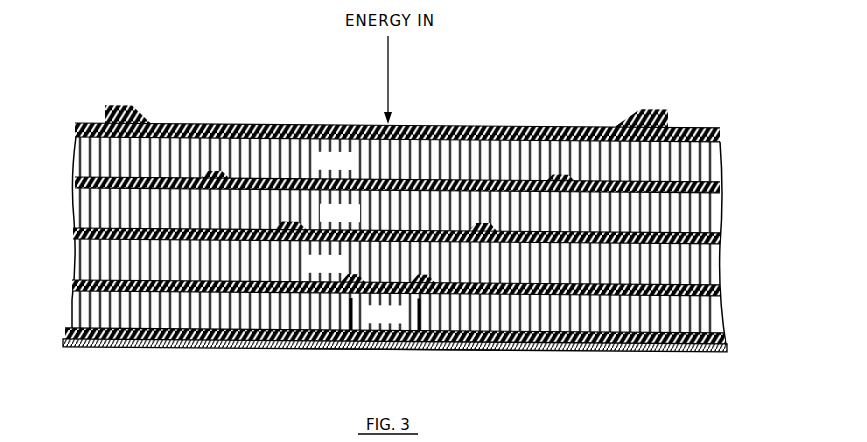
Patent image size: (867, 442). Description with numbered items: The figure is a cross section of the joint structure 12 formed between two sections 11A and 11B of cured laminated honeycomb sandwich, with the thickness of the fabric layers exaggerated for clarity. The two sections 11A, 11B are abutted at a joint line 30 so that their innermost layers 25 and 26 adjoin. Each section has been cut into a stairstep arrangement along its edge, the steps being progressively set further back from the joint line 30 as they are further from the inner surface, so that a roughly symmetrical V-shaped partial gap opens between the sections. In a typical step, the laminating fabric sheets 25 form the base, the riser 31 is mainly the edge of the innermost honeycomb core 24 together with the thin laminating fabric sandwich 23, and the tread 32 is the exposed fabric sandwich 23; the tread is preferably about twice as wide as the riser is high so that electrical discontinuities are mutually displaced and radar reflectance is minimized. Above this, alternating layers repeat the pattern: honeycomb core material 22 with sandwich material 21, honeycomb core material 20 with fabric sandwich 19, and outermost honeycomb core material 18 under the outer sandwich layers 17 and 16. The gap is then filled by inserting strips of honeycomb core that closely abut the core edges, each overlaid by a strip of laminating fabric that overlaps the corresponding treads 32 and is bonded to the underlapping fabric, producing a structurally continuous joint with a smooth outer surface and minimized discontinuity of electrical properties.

The section of laminated honeycomb sandwich 11A is at (91, 114).
The section of laminated honeycomb sandwich 11B is at (682, 115).
The joint structure 12 is at (491, 120).
The outermost sandwich layer 16 is at (721, 128).
The outermost sandwich layer 17 is at (75, 130).
The honeycomb core material 18 is at (702, 158).
The fabric sandwich 19 is at (75, 183).
The honeycomb core material 20 is at (710, 211).
The sandwich material 21 is at (73, 233).
The honeycomb core material 22 is at (706, 262).
The laminating fabric sandwich 23 is at (72, 285).
The innermost honeycomb core 24 is at (713, 319).
The laminating fabric sheets 25 is at (66, 333).
The innermost layer 26 is at (150, 348).
The joint line 30 is at (388, 348).
The riser 31 is at (350, 322).
The tread 32 is at (285, 288).